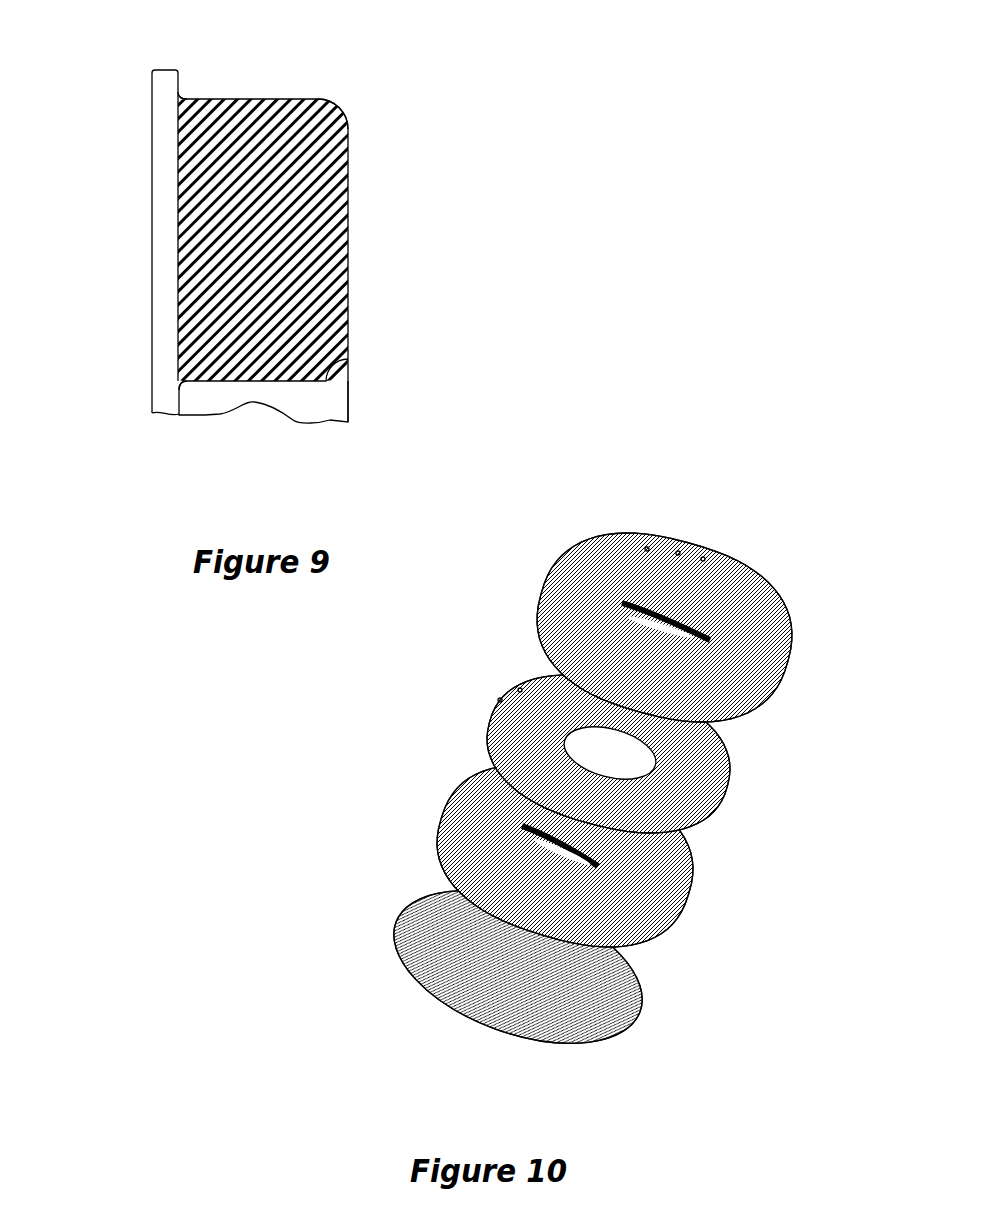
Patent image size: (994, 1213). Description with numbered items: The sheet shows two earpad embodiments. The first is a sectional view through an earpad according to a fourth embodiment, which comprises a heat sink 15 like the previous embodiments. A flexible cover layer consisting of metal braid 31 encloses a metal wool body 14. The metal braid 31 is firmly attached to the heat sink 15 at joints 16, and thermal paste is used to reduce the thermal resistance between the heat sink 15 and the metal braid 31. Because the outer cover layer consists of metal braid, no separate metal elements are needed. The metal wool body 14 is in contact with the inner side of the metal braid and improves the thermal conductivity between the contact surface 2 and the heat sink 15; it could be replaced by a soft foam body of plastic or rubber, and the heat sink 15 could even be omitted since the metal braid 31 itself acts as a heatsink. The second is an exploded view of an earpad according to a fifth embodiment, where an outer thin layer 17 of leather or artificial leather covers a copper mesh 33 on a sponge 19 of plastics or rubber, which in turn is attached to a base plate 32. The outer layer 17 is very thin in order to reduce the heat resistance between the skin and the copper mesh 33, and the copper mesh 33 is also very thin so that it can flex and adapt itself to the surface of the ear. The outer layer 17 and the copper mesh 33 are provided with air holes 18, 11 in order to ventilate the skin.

In FIG. 9, the contact surface 2 is at (348, 231).
In FIG. 9, the metal wool body 14 is at (298, 335).
In FIG. 9, the heat sink 15 is at (158, 130).
In FIG. 9, the joints 16 is at (193, 72).
In FIG. 9, the metal braid 31 is at (303, 97).
In FIG. 10, the outer thin layer 17 is at (743, 587).
In FIG. 10, the air holes 18 is at (703, 558).
In FIG. 10, the air holes 11 is at (500, 685).
In FIG. 10, the copper mesh 33 is at (488, 713).
In FIG. 10, the sponge 19 is at (463, 802).
In FIG. 10, the base plate 32 is at (423, 915).